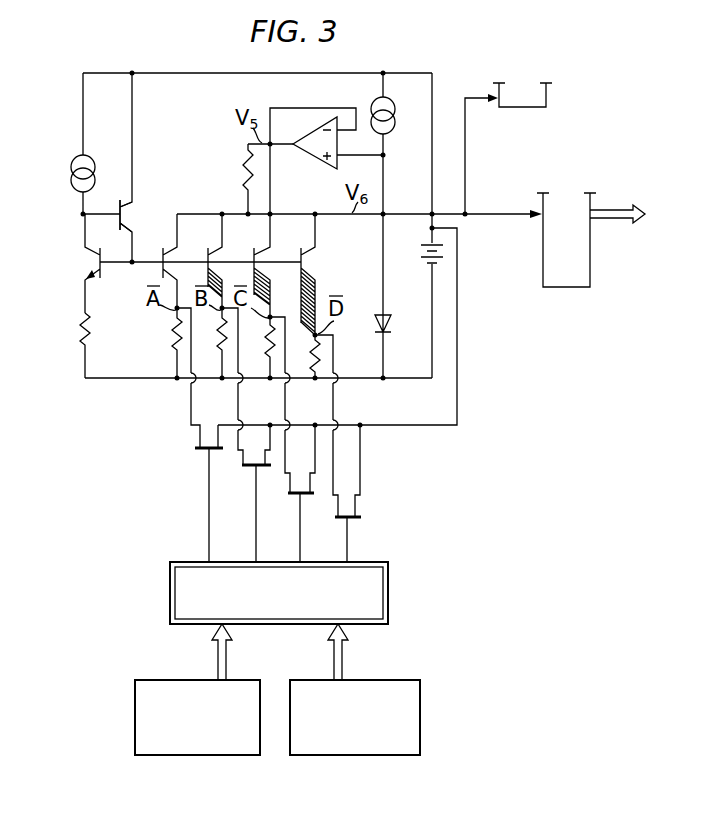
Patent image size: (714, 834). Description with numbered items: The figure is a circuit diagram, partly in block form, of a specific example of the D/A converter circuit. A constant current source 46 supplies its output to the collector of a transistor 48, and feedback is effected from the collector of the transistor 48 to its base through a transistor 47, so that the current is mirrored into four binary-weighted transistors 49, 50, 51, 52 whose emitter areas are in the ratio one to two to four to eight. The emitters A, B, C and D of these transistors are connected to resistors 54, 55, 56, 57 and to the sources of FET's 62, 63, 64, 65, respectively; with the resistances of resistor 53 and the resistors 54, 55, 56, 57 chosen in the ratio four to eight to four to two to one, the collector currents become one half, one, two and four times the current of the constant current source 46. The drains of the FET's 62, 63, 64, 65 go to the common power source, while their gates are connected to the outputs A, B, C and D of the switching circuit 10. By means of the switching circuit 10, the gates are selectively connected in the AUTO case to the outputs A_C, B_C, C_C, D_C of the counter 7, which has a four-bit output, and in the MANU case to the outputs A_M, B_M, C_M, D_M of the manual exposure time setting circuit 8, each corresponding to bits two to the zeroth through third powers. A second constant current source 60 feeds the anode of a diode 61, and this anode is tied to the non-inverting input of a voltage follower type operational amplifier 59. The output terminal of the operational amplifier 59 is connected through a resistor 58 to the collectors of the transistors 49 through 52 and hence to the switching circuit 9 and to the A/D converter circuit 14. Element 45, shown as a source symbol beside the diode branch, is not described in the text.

The counter 7 is at (160, 682).
The manual exposure time setting circuit 8 is at (408, 682).
The switching circuit 9 is at (512, 110).
The switching circuit 10 is at (180, 575).
The A/D converter circuit 14 is at (542, 207).
The reference voltage source 45 is at (422, 258).
The constant current source 46 is at (78, 176).
The transistor 47 is at (126, 216).
The transistor 48 is at (94, 262).
The transistor 49 is at (173, 248).
The transistor 50 is at (214, 257).
The transistor 51 is at (260, 257).
The transistor 52 is at (310, 262).
The resistor 53 is at (92, 328).
The resistor 54 is at (172, 336).
The resistor 55 is at (218, 333).
The resistor 56 is at (270, 336).
The resistor 57 is at (316, 360).
The resistor 58 is at (243, 178).
The voltage follower type operational amplifier 59 is at (313, 157).
The constant current source 60 is at (396, 108).
The diode 61 is at (392, 326).
The FET 62 is at (193, 440).
The FET 63 is at (240, 452).
The FET 64 is at (288, 480).
The FET 65 is at (338, 506).